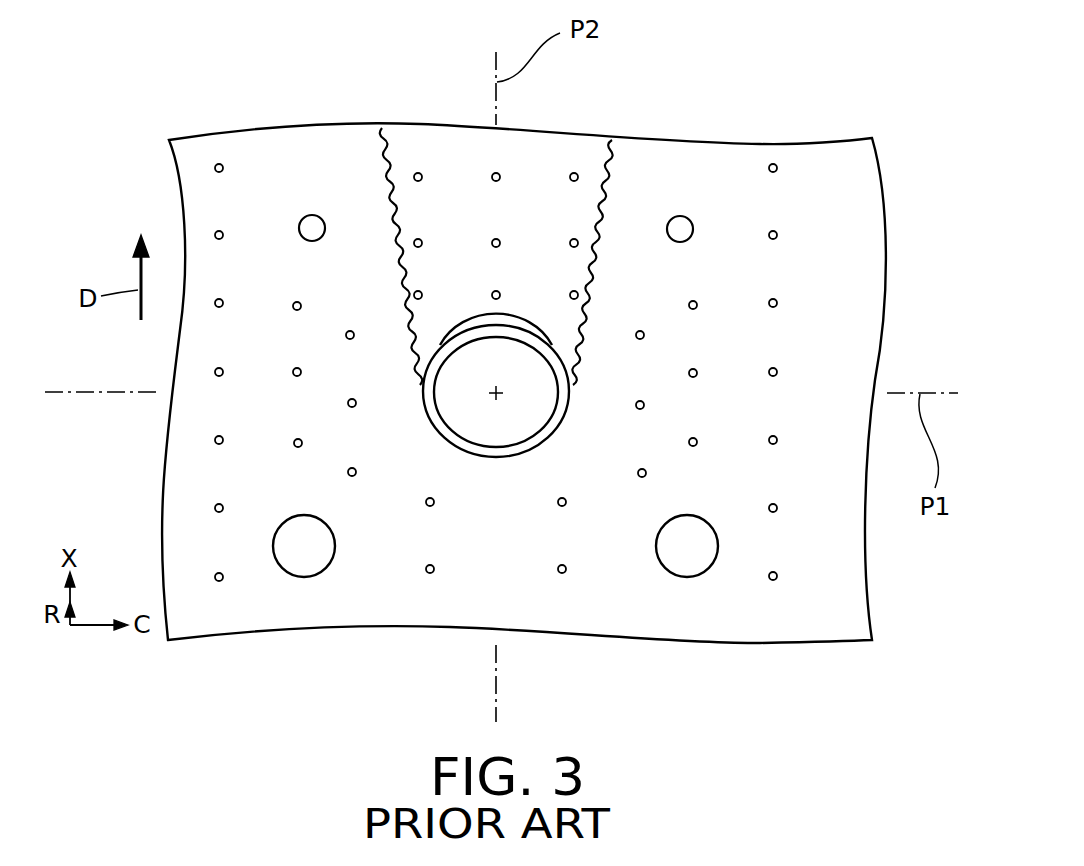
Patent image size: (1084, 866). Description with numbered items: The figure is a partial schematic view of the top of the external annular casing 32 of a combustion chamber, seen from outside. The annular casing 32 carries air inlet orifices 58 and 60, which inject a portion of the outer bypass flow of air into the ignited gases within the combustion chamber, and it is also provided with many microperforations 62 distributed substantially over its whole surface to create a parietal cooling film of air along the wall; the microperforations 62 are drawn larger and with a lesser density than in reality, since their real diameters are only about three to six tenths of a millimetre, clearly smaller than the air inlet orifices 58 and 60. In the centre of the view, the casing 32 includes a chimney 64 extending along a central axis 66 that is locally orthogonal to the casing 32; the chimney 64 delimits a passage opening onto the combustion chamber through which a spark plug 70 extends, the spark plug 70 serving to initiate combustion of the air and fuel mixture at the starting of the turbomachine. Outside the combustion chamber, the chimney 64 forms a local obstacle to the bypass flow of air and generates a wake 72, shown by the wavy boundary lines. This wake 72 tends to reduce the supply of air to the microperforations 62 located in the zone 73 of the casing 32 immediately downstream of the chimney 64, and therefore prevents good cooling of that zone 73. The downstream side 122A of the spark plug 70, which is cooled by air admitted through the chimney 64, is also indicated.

The outer annular casing 32 is at (215, 613).
The air inlet orifice 58 is at (310, 576).
The air inlet orifice 60 is at (306, 215).
The microperforations 62 is at (773, 581).
The chimney 64 is at (548, 437).
The central axis 66 is at (494, 396).
The spark plug 70 is at (492, 447).
The wake 72 is at (617, 168).
The zone 73 is at (458, 243).
The downstream side of the spark plug 122A is at (507, 337).